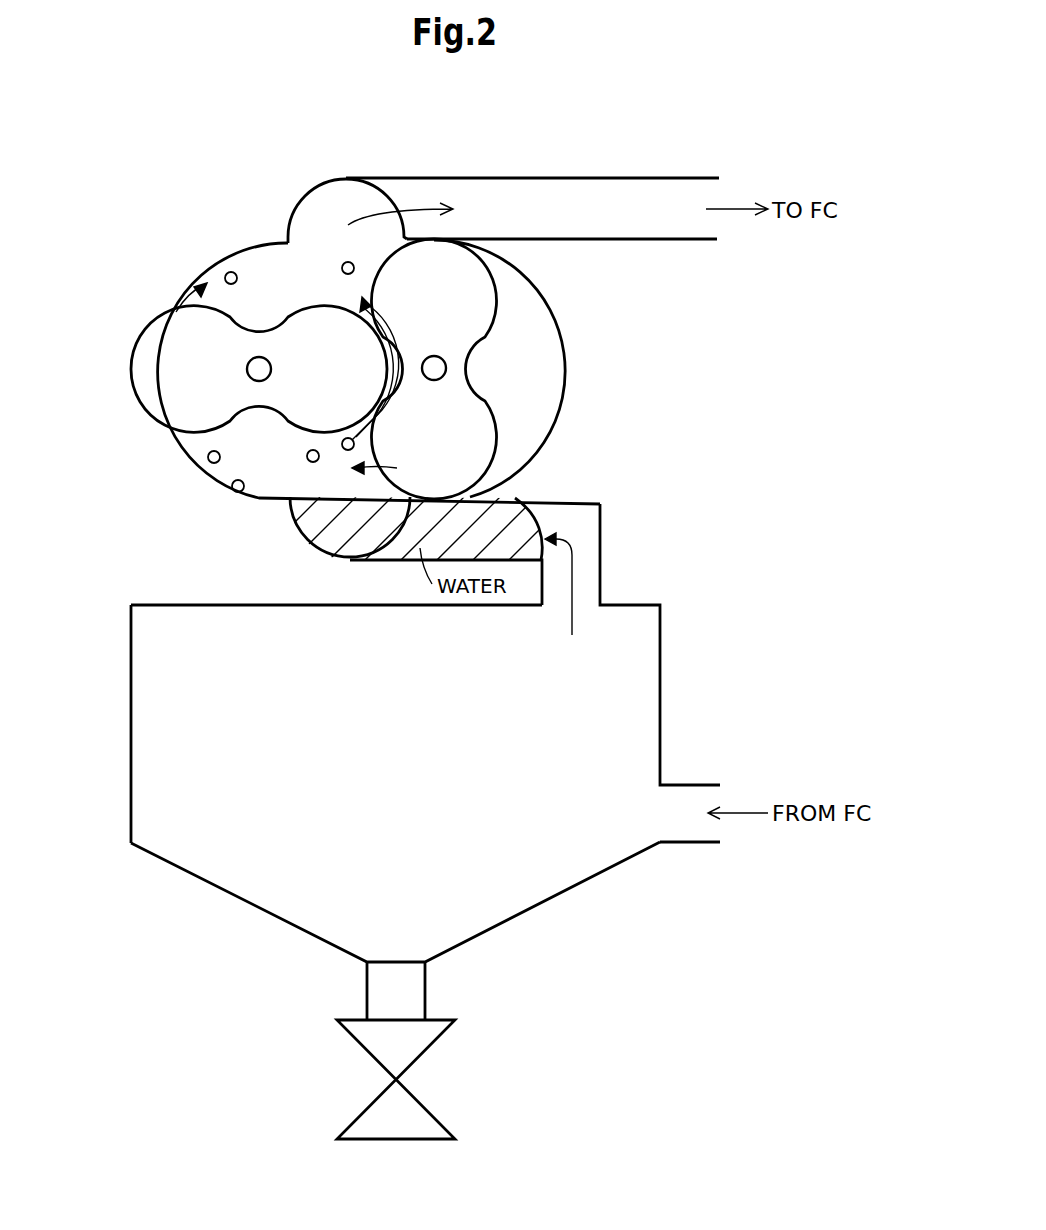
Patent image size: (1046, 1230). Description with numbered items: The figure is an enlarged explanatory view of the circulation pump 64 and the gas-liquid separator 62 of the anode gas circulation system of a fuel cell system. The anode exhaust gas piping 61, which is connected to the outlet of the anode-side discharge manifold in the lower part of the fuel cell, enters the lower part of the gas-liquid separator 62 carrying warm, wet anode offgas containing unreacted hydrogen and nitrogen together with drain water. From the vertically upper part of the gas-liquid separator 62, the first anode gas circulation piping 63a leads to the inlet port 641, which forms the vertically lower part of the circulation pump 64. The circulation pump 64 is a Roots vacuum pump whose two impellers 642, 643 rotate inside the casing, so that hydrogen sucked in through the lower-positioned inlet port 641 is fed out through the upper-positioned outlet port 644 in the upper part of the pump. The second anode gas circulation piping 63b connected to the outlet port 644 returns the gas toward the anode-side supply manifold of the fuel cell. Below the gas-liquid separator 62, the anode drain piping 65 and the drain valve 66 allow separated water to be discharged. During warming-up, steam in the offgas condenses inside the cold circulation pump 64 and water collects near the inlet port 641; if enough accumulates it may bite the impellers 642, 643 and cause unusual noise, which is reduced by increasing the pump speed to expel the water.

The anode exhaust gas piping 61 is at (697, 843).
The gas-liquid separator 62 is at (572, 889).
The first anode gas circulation piping 63a is at (603, 548).
The second anode gas circulation piping 63b is at (650, 240).
The circulation pump 64 is at (568, 364).
The inlet port 641 is at (348, 542).
The impeller 642 is at (482, 314).
The impeller 643 is at (325, 328).
The outlet port 644 is at (334, 193).
The anode drain piping 65 is at (424, 993).
The drain valve 66 is at (434, 1117).